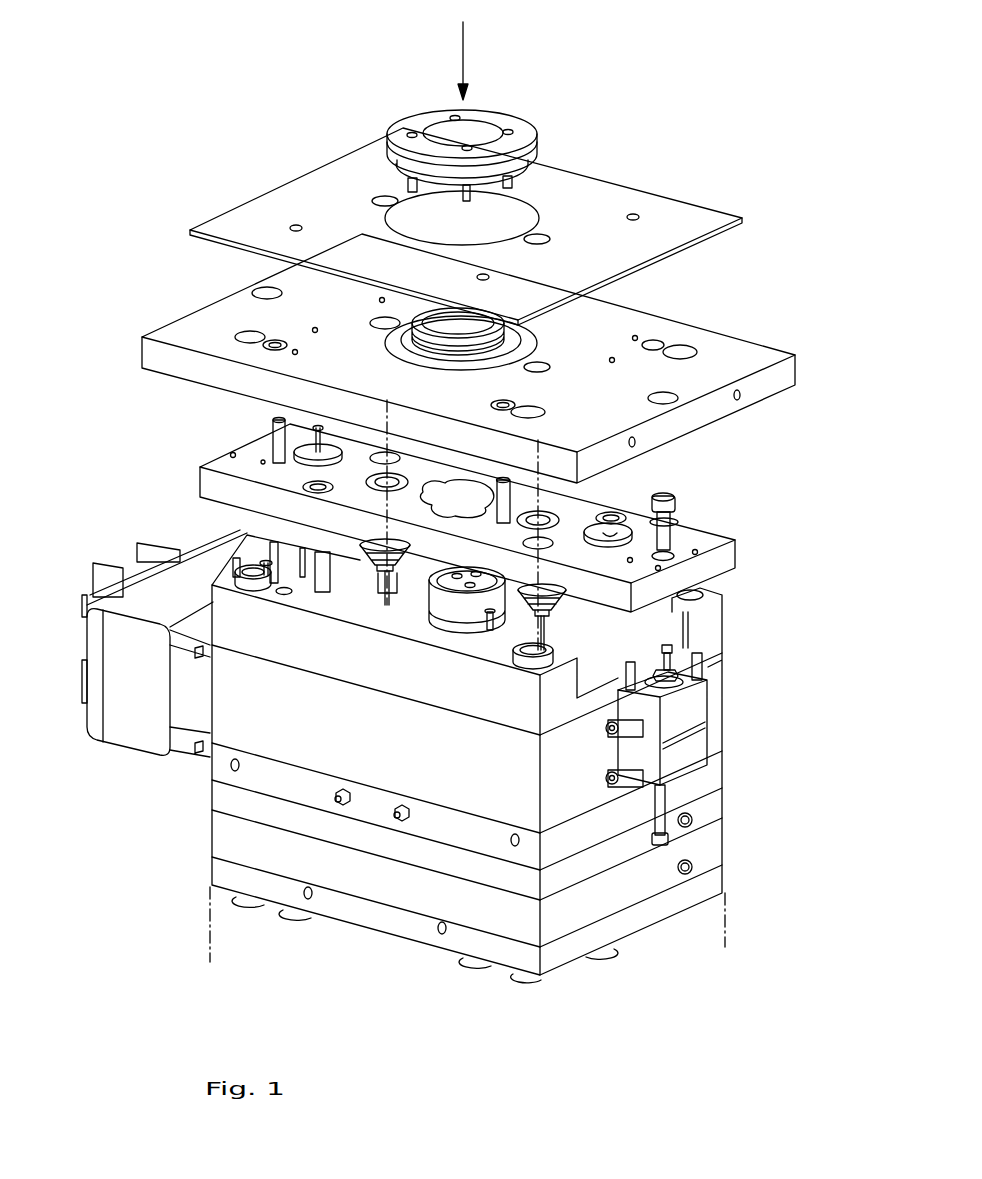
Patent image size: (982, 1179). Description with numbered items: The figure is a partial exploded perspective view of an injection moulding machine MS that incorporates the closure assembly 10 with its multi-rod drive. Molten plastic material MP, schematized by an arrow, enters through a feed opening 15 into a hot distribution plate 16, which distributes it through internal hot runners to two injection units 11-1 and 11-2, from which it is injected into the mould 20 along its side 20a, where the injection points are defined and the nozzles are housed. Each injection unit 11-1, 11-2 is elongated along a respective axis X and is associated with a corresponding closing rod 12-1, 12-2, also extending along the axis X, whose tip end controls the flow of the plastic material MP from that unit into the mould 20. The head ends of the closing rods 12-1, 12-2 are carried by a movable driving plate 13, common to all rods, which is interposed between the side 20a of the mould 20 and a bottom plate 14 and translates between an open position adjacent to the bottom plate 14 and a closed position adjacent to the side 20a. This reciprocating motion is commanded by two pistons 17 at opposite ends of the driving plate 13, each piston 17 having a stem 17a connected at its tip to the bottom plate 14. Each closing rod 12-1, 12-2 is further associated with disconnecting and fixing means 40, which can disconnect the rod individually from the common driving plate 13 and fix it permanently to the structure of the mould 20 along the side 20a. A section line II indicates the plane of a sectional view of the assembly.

The closure assembly 10 is at (474, 442).
The injection unit 11-1 is at (364, 590).
The injection unit 11-2 is at (570, 647).
The closing rod 12-1 is at (208, 772).
The closing rod 12-2 is at (770, 623).
The movable driving plate 13 is at (715, 562).
The bottom plate 14 is at (738, 362).
The feed opening 15 is at (486, 134).
The hot distribution plate 16 is at (563, 790).
The piston 17 is at (695, 707).
The stem 17a is at (675, 522).
The mould 20 is at (227, 947).
The side of the mould 20a is at (643, 652).
The disconnecting and fixing means 40 is at (368, 468).
The axis X is at (389, 440).
The section line II is at (183, 430).
The injection moulding machine MS is at (116, 151).
The plastic material MP is at (463, 50).